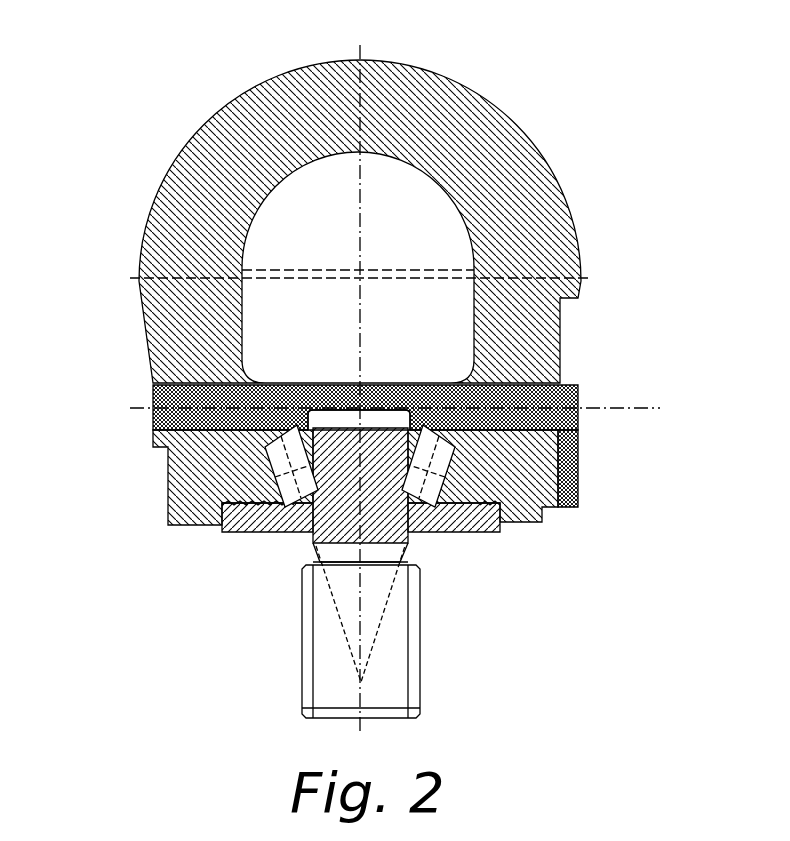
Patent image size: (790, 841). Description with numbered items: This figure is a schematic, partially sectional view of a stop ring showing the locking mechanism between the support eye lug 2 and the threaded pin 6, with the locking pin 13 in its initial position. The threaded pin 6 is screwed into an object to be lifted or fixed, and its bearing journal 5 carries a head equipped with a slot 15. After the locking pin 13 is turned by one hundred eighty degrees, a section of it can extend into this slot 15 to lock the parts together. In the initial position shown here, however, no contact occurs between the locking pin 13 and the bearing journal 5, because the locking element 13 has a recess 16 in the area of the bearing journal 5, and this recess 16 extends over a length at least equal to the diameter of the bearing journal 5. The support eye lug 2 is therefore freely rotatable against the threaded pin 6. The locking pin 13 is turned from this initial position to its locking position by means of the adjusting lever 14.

The support eye lug 2 is at (487, 128).
The bearing journal 5 is at (392, 472).
The threaded pin 6 is at (408, 662).
The locking pin 13 is at (542, 397).
The adjusting lever 14 is at (577, 454).
The slot 15 is at (393, 420).
The recess 16 is at (298, 427).